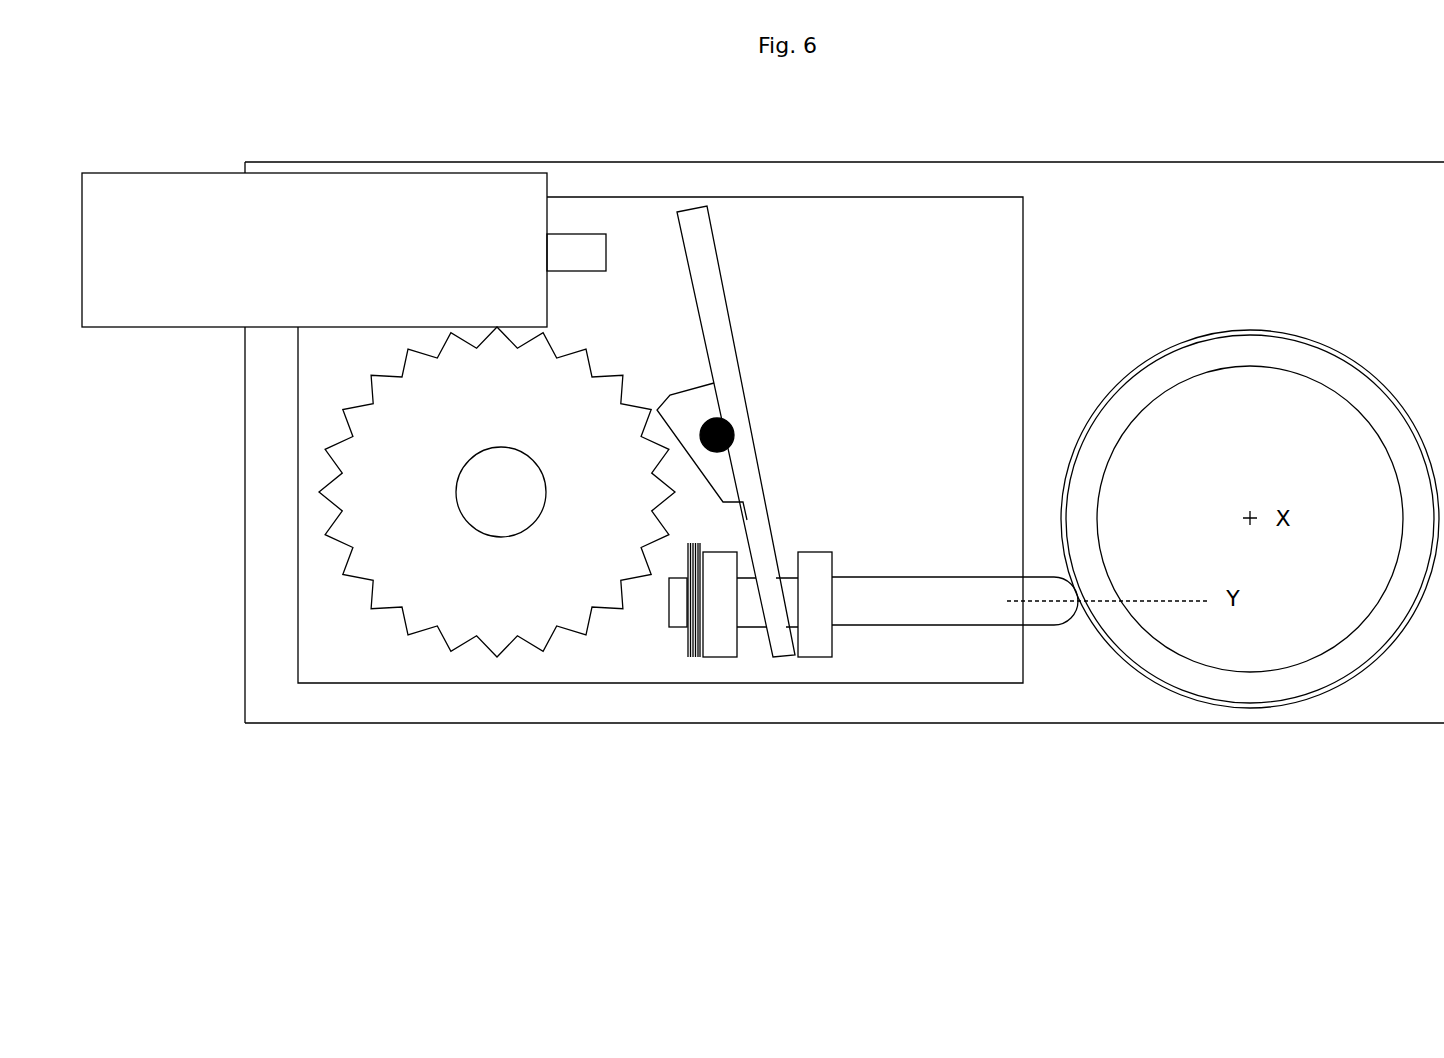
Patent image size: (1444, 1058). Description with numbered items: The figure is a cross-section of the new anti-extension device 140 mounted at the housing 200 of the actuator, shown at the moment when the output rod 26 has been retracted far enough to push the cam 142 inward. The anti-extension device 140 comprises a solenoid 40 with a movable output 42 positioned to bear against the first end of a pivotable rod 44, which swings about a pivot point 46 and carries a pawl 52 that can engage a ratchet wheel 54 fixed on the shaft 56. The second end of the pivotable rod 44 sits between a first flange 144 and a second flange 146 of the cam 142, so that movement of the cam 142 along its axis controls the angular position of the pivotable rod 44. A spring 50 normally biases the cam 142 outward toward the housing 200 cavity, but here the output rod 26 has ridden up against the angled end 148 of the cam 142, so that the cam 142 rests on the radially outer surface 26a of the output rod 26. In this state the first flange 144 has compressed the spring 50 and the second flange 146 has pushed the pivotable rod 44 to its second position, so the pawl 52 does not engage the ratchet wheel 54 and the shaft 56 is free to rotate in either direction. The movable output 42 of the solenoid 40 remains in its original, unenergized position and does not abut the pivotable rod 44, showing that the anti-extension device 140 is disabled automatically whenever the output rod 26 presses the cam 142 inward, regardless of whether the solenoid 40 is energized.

The housing 200 is at (1238, 158).
The anti-extension device 140 is at (870, 196).
The solenoid 40 is at (277, 265).
The movable output 42 is at (581, 242).
The ratchet wheel 54 is at (483, 417).
The shaft 56 is at (483, 507).
The pivotable rod 44 is at (763, 468).
The pawl 52 is at (670, 393).
The pivot point 46 is at (740, 427).
The spring 50 is at (688, 655).
The first flange 144 is at (723, 612).
The second flange 146 is at (817, 612).
The cam 142 is at (918, 613).
The angled end 148 is at (1078, 588).
The output rod 26 is at (1337, 673).
The radially outer surface 26a is at (1167, 375).